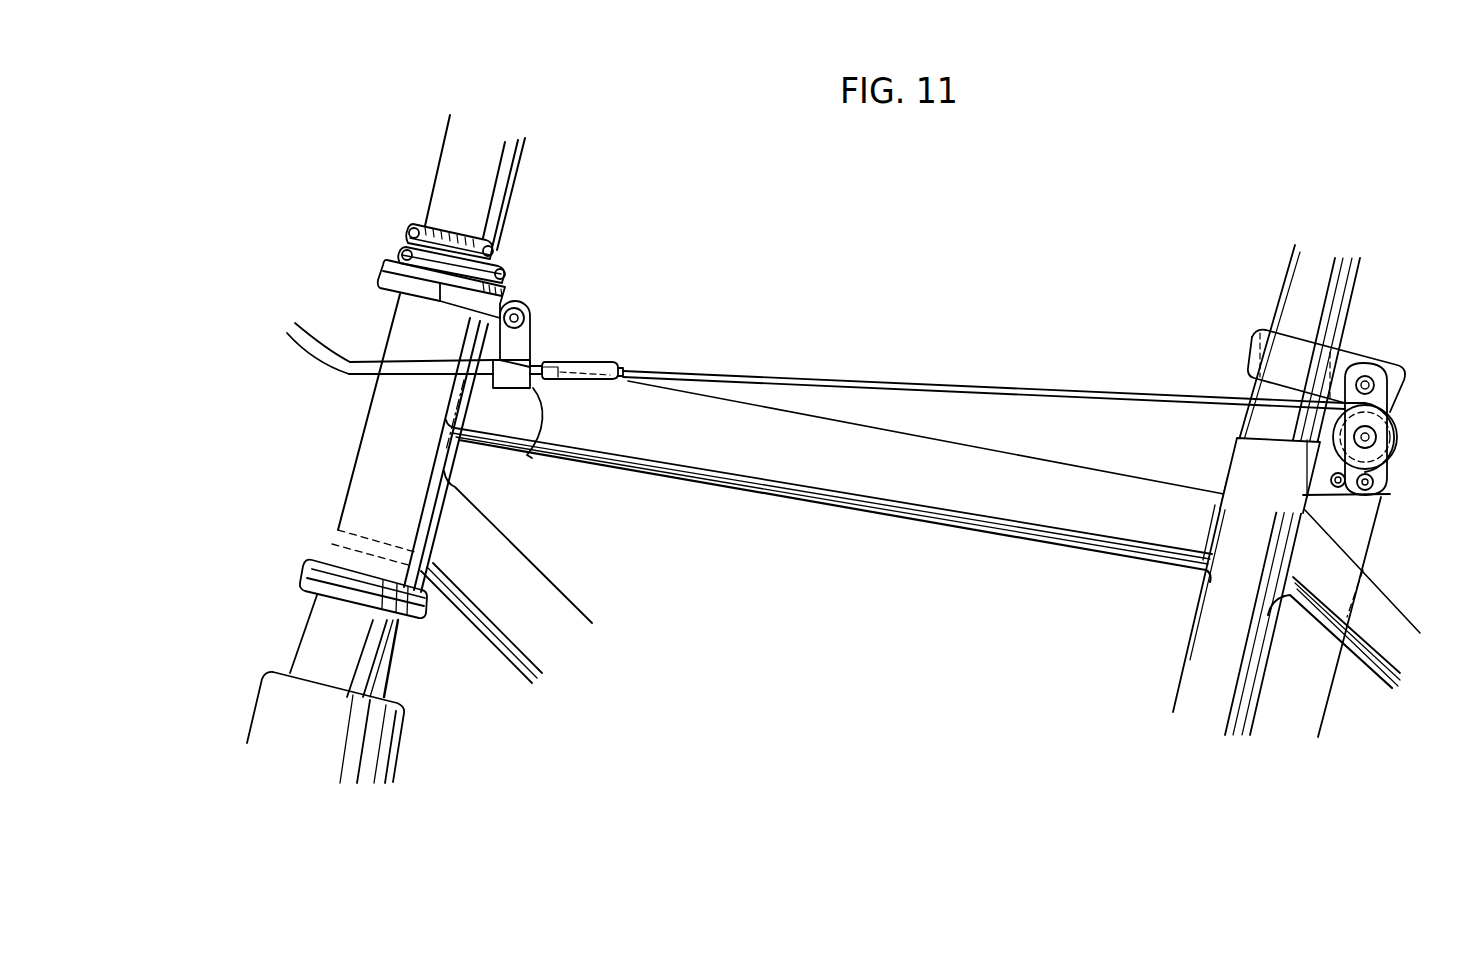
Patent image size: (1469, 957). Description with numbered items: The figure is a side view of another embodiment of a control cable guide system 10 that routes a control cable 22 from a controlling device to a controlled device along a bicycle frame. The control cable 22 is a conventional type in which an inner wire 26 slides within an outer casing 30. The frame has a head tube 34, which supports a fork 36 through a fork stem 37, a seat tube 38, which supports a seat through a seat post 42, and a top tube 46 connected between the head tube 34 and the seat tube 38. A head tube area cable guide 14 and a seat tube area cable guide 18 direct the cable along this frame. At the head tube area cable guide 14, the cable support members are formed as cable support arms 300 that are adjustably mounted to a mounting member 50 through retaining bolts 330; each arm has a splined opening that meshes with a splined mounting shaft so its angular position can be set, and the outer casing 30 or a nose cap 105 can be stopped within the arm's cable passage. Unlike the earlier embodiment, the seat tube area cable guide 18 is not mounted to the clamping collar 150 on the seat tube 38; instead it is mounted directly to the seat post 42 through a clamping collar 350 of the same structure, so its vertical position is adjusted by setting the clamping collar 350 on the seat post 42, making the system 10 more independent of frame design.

The control cable guide system 10 is at (878, 300).
The head tube area cable guide 14 is at (527, 272).
The seat tube area cable guide 18 is at (1461, 276).
The control cable 22 is at (327, 378).
The inner wire 26 is at (860, 383).
The outer casing 30 is at (350, 359).
The head tube 34 is at (357, 472).
The fork 36 is at (383, 740).
The fork stem 37 is at (395, 655).
The seat tube 38 is at (1202, 628).
The seat post 42 is at (1293, 280).
The top tube 46 is at (833, 490).
The mounting member 50 is at (386, 278).
The nose cap 105 is at (537, 443).
The clamping collar 150 is at (1250, 465).
The cable support arm 300 is at (530, 347).
The retaining bolt 330 is at (527, 312).
The clamping collar 350 is at (1268, 347).